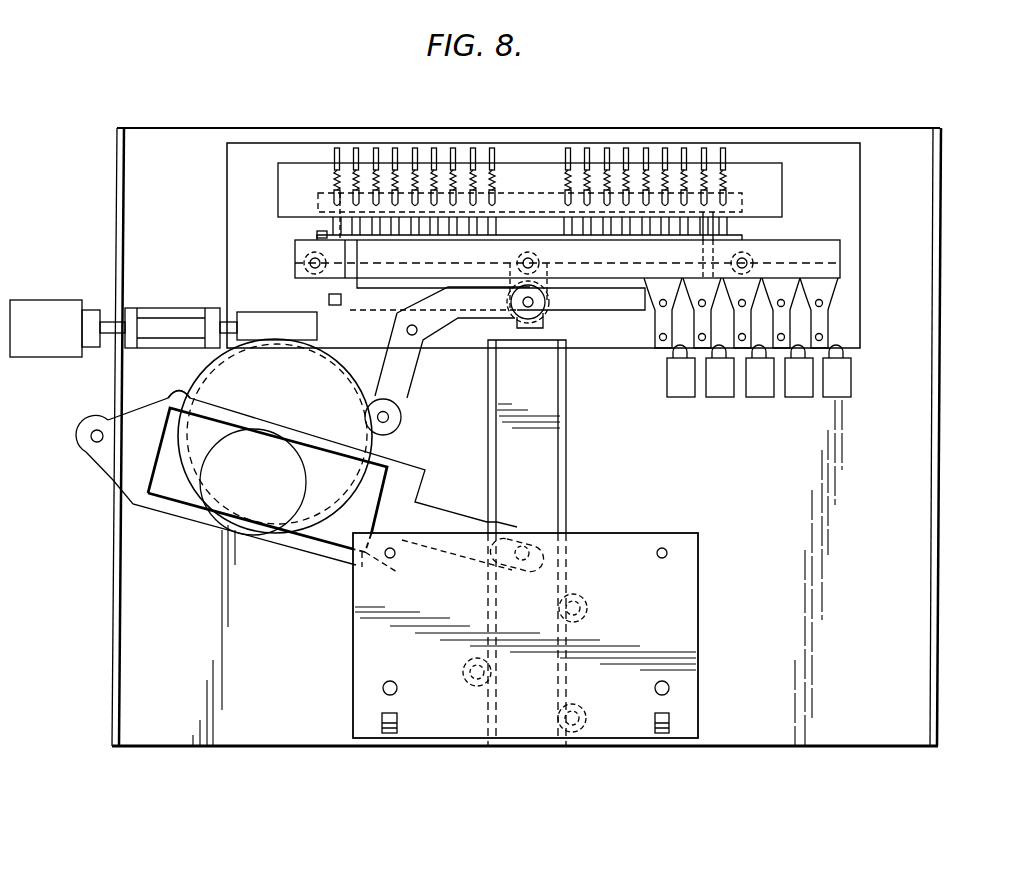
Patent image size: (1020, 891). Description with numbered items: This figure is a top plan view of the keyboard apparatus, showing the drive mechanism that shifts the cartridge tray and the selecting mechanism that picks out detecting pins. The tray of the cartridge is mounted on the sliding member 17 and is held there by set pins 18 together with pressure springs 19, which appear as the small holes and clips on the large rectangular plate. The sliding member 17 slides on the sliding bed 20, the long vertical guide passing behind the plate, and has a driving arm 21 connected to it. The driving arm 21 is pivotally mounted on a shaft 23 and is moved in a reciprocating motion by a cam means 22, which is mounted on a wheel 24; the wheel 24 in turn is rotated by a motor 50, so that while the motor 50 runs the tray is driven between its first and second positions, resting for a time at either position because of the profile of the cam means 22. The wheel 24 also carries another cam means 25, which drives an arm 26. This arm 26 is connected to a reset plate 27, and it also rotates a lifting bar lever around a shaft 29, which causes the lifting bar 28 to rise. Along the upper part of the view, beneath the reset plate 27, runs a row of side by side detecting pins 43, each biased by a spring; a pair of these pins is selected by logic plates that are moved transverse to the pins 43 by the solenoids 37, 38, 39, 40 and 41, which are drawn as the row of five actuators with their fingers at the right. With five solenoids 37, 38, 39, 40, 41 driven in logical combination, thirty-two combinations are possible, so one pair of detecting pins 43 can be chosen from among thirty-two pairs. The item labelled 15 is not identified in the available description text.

The spring-loaded needles 15 is at (590, 192).
The detecting pin 43 is at (707, 152).
The reset plate 27 is at (320, 231).
The lifting bar 28 is at (356, 297).
The shaft 29 is at (335, 305).
The motor 50 is at (52, 305).
The wheel 24 is at (228, 386).
The cam means 25 is at (178, 402).
The shaft 23 is at (97, 448).
The cam means 22 is at (238, 500).
The driving arm 21 is at (312, 548).
The arm 26 is at (402, 380).
The sliding bed 20 is at (545, 440).
The set pins 18 is at (388, 560).
The sliding member 17 is at (684, 606).
The pressure springs 19 is at (380, 723).
The solenoid 37 is at (683, 390).
The solenoid 38 is at (722, 392).
The solenoid 39 is at (758, 390).
The solenoid 40 is at (797, 392).
The solenoid 41 is at (836, 392).